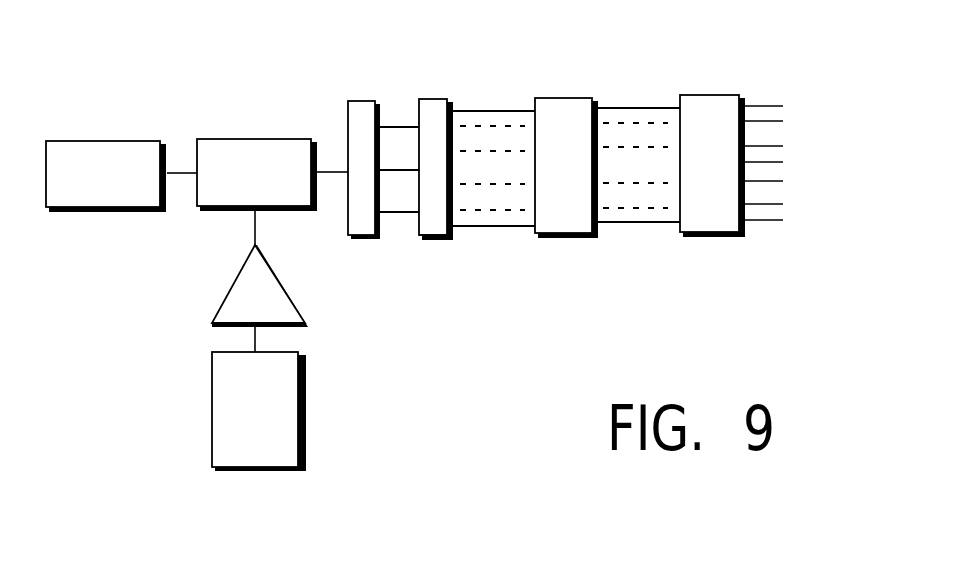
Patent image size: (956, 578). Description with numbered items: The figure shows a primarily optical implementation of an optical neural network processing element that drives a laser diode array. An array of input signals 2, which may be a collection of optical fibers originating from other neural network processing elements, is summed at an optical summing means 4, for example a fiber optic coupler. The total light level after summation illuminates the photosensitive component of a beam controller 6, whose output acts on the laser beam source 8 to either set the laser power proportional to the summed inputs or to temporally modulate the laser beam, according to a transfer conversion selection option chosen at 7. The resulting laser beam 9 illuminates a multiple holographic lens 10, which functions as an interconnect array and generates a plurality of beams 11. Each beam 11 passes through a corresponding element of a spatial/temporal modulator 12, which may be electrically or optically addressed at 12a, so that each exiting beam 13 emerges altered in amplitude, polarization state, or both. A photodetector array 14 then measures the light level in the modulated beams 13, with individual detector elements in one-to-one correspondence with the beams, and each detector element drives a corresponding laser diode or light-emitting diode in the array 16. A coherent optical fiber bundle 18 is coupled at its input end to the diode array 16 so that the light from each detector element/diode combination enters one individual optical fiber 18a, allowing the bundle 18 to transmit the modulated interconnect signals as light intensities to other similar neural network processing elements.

The input signals 2 is at (213, 412).
The optical summing means 4 is at (233, 284).
The beam controller 6 is at (258, 139).
The transfer conversion selection option 7 is at (217, 130).
The laser beam source 8 is at (93, 141).
The laser beam 9 is at (325, 170).
The multiple holographic lens 10 is at (361, 101).
The beams 11 is at (397, 112).
The spatial/temporal modulator 12 is at (435, 99).
The modulator addressing 12a is at (435, 255).
The exiting beam 13 is at (497, 98).
The photodetector array 14 is at (563, 97).
The laser diode or light-emitting diode array 16 is at (703, 95).
The coherent optical fiber bundle 18 is at (785, 93).
The individual optical fiber 18a is at (758, 106).